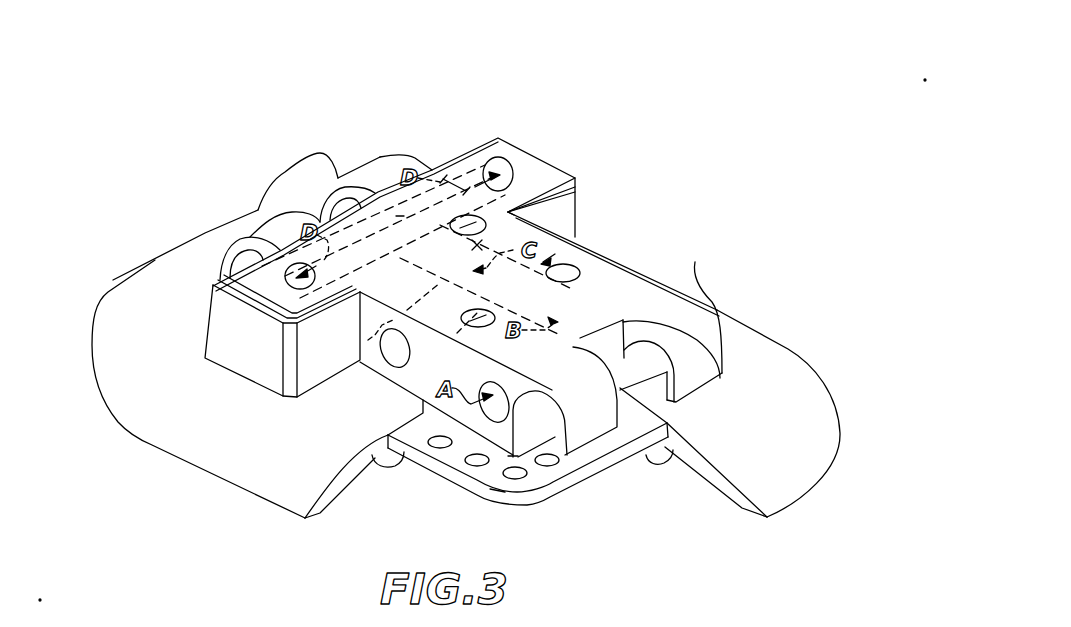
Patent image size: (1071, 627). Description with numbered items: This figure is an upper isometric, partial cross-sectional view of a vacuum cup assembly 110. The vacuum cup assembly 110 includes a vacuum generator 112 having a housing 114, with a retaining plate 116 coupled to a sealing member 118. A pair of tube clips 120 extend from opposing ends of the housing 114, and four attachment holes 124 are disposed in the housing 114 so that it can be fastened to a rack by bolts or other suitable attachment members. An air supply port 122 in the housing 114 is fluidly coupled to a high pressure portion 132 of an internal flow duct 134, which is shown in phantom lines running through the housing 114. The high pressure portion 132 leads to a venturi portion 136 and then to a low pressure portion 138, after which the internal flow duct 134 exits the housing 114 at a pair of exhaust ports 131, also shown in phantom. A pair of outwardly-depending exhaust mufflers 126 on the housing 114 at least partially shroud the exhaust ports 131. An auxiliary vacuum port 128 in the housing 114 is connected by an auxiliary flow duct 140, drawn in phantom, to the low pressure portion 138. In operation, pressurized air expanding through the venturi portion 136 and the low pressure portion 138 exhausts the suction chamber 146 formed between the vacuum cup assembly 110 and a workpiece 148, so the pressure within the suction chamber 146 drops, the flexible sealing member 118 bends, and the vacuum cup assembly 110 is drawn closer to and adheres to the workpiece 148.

The vacuum cup assembly 110 is at (223, 168).
The vacuum generator 112 is at (617, 190).
The housing 114 is at (400, 216).
The retaining plate 116 is at (530, 505).
The sealing member 118 is at (707, 480).
The tube clips 120 is at (335, 173).
The air supply port 122 is at (514, 457).
The attachment holes 124 is at (508, 212).
The exhaust mufflers 126 is at (237, 350).
The auxiliary vacuum port 128 is at (392, 348).
The exhaust ports 131 is at (490, 152).
The high pressure portion 132 is at (497, 367).
The internal flow duct 134 is at (579, 235).
The venturi portion 136 is at (532, 298).
The low pressure portion 138 is at (482, 244).
The auxiliary flow duct 140 is at (363, 340).
The suction chamber 146 is at (489, 514).
The workpiece 148 is at (263, 548).